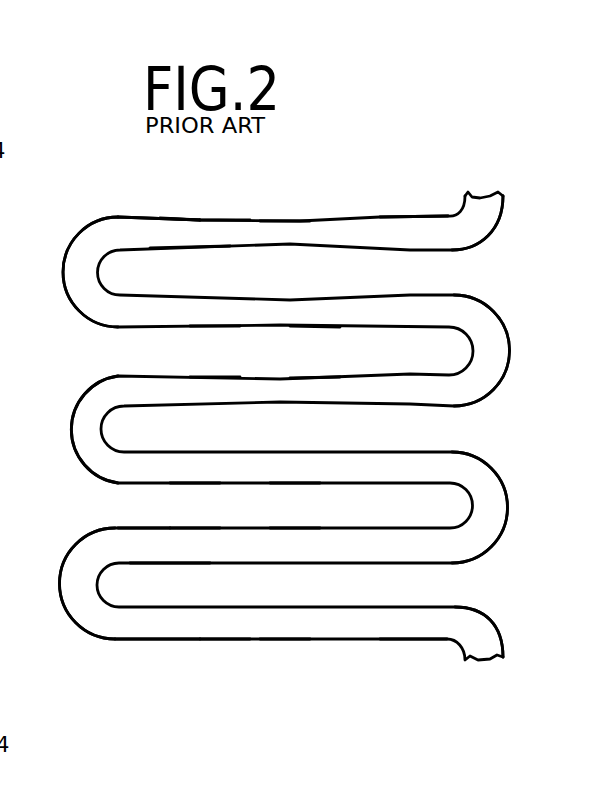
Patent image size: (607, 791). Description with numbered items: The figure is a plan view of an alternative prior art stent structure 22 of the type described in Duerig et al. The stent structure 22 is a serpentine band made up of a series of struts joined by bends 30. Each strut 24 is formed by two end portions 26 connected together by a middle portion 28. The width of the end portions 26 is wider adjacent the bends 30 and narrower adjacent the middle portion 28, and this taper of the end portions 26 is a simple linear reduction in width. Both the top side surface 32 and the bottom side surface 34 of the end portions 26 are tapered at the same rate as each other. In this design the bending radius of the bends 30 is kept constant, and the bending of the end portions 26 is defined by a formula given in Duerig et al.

The stent structure 22 is at (383, 154).
The strut 24 is at (223, 214).
The end portions 26 is at (152, 214).
The middle portion 28 is at (282, 214).
The bends 30 is at (506, 204).
The top side surface 32 is at (182, 214).
The bottom side surface 34 is at (192, 253).